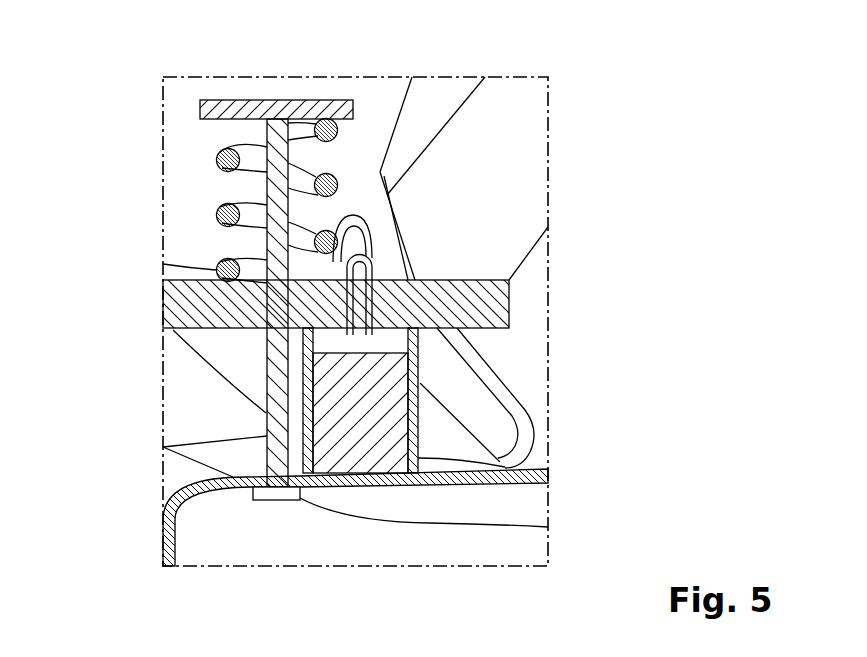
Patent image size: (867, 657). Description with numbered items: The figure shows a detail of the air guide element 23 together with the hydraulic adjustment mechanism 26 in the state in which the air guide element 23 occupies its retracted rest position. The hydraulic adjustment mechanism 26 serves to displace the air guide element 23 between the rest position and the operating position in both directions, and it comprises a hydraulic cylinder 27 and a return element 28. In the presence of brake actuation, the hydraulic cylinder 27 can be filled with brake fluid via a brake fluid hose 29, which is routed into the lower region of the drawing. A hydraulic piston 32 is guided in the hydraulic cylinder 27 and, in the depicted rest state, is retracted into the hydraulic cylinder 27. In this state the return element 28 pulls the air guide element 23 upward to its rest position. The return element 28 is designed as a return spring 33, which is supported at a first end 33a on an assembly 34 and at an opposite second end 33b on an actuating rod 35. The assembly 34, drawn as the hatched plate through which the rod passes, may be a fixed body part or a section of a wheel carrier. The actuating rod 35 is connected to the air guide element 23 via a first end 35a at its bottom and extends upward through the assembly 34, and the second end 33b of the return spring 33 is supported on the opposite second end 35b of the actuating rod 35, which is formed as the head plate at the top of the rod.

The air guide element 23 is at (515, 212).
The hydraulic adjustment mechanism 26 is at (348, 89).
The hydraulic cylinder 27 is at (422, 367).
The return element 28 is at (178, 187).
The brake fluid hose 29 is at (445, 433).
The hydraulic piston 32 is at (360, 425).
The return spring 33 is at (217, 156).
The first end of the return spring 33a is at (217, 271).
The second end of the return spring 33b is at (338, 128).
The assembly 34 is at (487, 300).
The actuating rod 35 is at (262, 359).
The first end of the actuating rod 35a is at (265, 502).
The second end of the actuating rod 35b is at (245, 100).